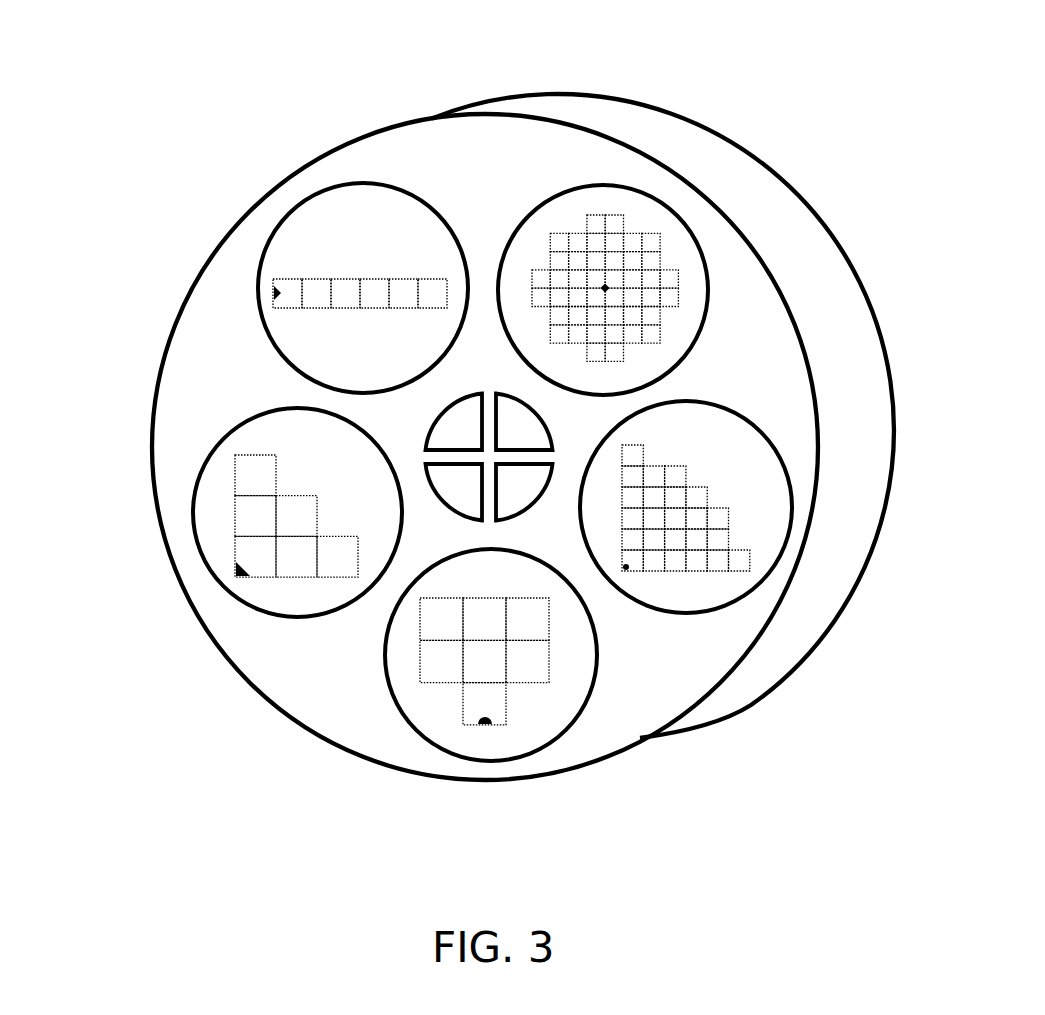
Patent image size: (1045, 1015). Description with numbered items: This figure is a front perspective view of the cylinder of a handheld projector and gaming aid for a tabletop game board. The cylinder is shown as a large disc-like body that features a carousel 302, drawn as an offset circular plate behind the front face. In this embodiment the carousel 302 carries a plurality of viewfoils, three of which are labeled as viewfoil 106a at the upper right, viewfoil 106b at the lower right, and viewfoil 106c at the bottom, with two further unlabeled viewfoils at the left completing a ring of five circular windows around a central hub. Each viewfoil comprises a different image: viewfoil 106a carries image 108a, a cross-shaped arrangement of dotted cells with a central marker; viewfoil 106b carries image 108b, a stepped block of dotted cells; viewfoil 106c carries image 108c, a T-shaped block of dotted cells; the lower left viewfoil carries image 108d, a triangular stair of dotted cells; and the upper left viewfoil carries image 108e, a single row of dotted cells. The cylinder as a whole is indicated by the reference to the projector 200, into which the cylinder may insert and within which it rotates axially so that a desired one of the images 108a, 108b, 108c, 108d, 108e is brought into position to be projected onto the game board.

The projector 200 is at (117, 93).
The carousel 302 is at (585, 116).
The viewfoil 106a is at (593, 198).
The viewfoil 106b is at (685, 557).
The viewfoil 106c is at (437, 655).
The image 108a is at (638, 275).
The image 108b is at (707, 537).
The image 108c is at (490, 700).
The image 108d is at (302, 563).
The image 108e is at (292, 292).